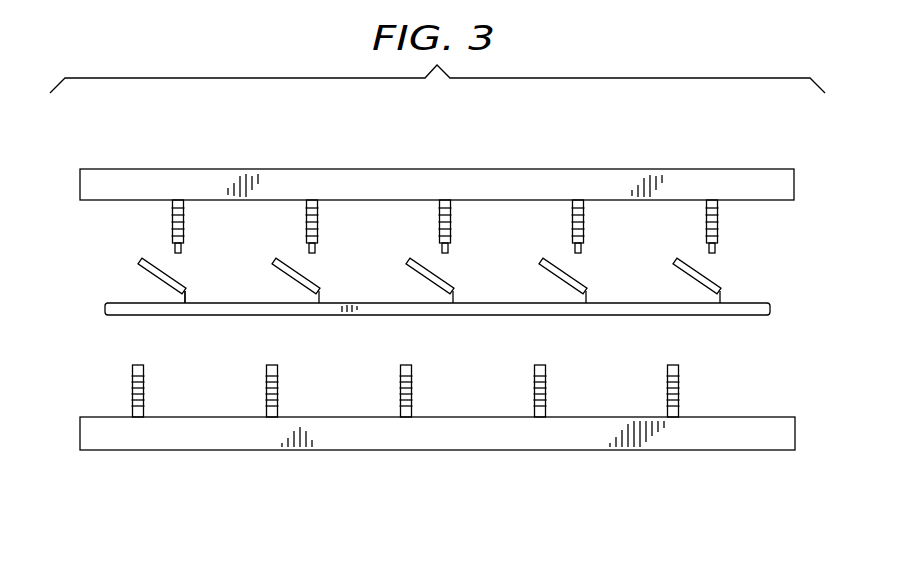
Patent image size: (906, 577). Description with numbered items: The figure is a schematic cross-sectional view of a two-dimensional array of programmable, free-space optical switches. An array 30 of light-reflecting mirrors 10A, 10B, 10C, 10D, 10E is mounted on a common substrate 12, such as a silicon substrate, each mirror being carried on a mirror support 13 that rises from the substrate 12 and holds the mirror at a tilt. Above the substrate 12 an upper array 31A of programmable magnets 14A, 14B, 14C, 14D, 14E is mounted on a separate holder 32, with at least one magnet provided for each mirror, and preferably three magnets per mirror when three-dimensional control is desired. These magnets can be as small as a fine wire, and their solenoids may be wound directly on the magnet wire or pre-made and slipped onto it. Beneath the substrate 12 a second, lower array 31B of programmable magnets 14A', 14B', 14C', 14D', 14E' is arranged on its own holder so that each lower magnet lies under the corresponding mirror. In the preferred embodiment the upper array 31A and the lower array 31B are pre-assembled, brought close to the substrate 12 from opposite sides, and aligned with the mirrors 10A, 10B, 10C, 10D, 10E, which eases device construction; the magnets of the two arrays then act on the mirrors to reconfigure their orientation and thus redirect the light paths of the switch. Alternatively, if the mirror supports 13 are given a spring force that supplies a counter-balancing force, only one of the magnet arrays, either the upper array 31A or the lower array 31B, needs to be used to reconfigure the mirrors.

The array of light-reflecting mirrors 30 is at (78, 285).
The upper array of programmable magnets 31A is at (208, 169).
The lower array of programmable magnets 31B is at (742, 450).
The holder 32 is at (740, 169).
The substrate 12 is at (105, 309).
The mirror support 13 is at (186, 297).
The light-reflecting mirror 10A is at (175, 283).
The light-reflecting mirror 10B is at (309, 283).
The light-reflecting mirror 10C is at (443, 283).
The light-reflecting mirror 10D is at (576, 283).
The light-reflecting mirror 10E is at (710, 283).
The programmable magnet 14A is at (210, 226).
The programmable magnet 14B is at (344, 226).
The programmable magnet 14C is at (477, 226).
The programmable magnet 14D is at (610, 226).
The programmable magnet 14E is at (744, 226).
The programmable magnet 14A' is at (174, 391).
The programmable magnet 14B' is at (307, 391).
The programmable magnet 14C' is at (441, 391).
The programmable magnet 14D' is at (575, 391).
The programmable magnet 14E' is at (708, 391).